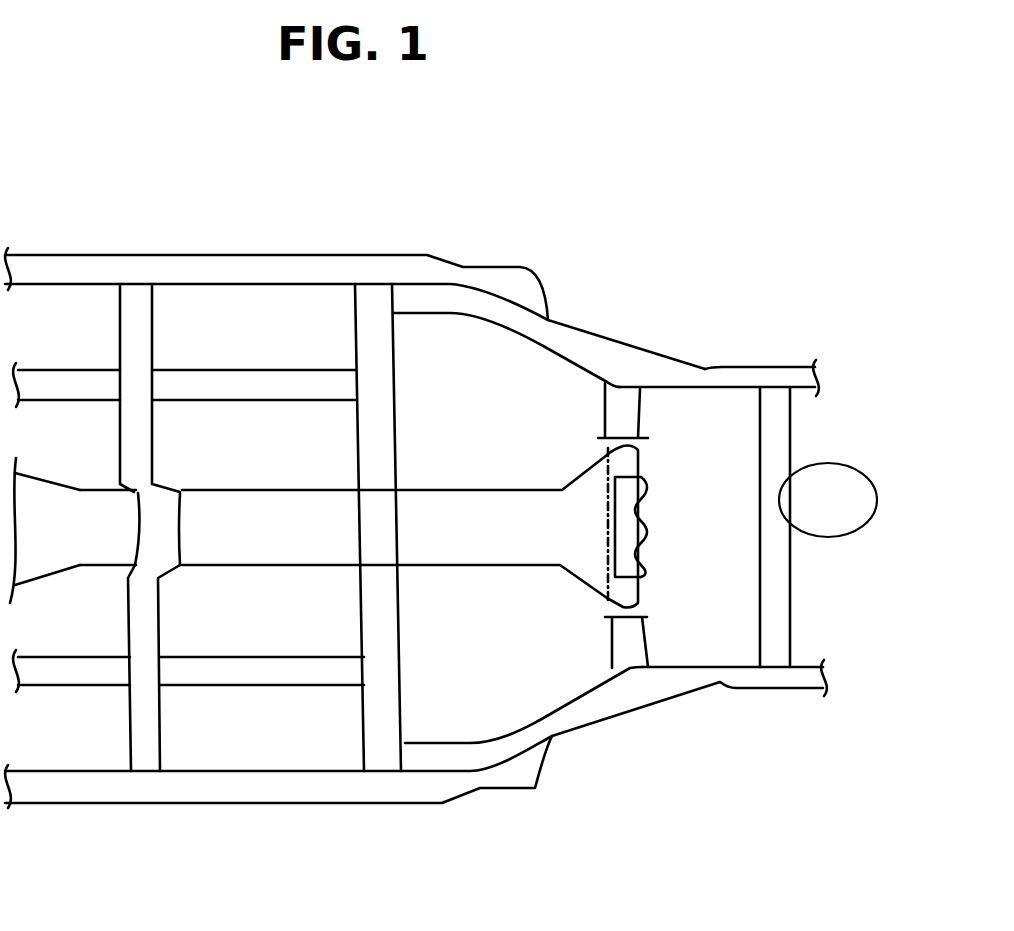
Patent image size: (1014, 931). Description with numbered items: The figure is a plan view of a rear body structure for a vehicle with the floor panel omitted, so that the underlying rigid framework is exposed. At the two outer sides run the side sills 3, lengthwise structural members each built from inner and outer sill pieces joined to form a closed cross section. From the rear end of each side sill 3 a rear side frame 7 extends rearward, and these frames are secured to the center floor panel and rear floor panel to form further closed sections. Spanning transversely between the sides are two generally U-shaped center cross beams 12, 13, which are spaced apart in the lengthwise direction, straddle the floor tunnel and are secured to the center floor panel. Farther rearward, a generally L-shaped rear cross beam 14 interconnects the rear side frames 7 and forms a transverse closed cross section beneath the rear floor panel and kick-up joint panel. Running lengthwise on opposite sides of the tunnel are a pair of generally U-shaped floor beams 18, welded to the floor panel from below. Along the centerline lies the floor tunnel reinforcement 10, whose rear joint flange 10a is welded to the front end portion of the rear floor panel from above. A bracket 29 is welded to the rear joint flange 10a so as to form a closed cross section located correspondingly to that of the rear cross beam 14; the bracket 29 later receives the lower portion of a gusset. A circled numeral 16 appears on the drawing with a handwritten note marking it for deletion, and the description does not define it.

The side sill 3 is at (227, 256).
The rear side frame 7 is at (688, 362).
The floor tunnel reinforcement 10 is at (267, 490).
The rear joint flange 10a is at (637, 463).
The center cross beam 12 is at (120, 326).
The center cross beam 13 is at (355, 329).
The rear cross beam 14 is at (606, 414).
The rear cross member 16 is at (792, 512).
The floor beam 18 is at (74, 401).
The bracket 29 is at (647, 571).